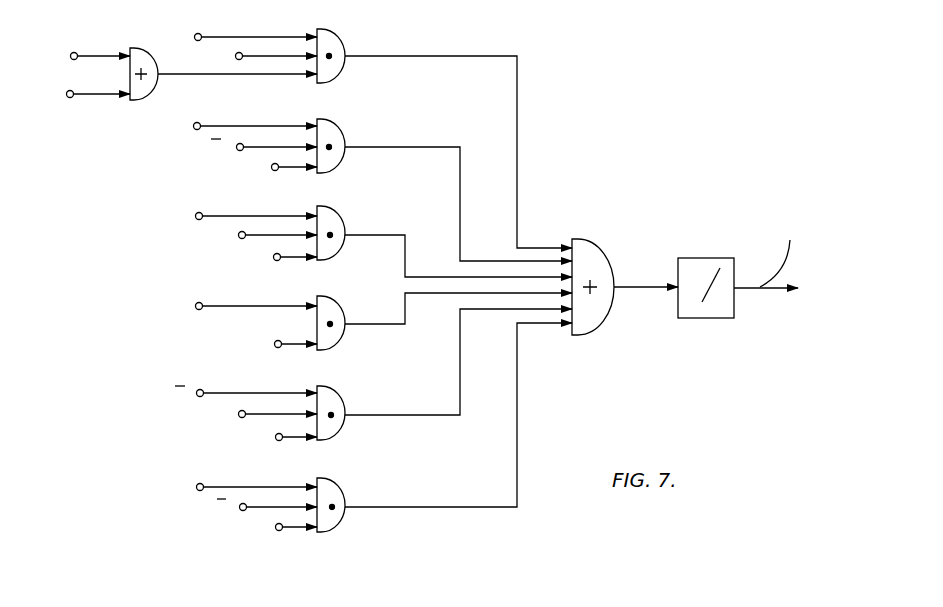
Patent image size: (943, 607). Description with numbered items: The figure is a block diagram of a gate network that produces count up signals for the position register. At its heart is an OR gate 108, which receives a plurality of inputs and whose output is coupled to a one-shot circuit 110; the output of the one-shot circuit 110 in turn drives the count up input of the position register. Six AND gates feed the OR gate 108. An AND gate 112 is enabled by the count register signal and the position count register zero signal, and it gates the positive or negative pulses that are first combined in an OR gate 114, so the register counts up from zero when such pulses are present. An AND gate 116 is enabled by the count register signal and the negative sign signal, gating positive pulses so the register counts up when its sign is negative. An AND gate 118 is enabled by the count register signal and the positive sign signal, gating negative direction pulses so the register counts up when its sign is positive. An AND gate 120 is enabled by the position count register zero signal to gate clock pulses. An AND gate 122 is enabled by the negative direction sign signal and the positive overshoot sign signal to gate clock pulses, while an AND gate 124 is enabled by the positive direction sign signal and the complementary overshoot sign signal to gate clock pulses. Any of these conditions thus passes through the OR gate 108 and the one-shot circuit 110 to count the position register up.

The OR gate 108 is at (585, 262).
The one-shot circuit 110 is at (702, 313).
The AND gate 112 is at (327, 31).
The OR gate 114 is at (138, 103).
The AND gate 116 is at (337, 133).
The AND gate 118 is at (336, 222).
The AND gate 120 is at (334, 312).
The AND gate 122 is at (340, 398).
The AND gate 124 is at (335, 490).